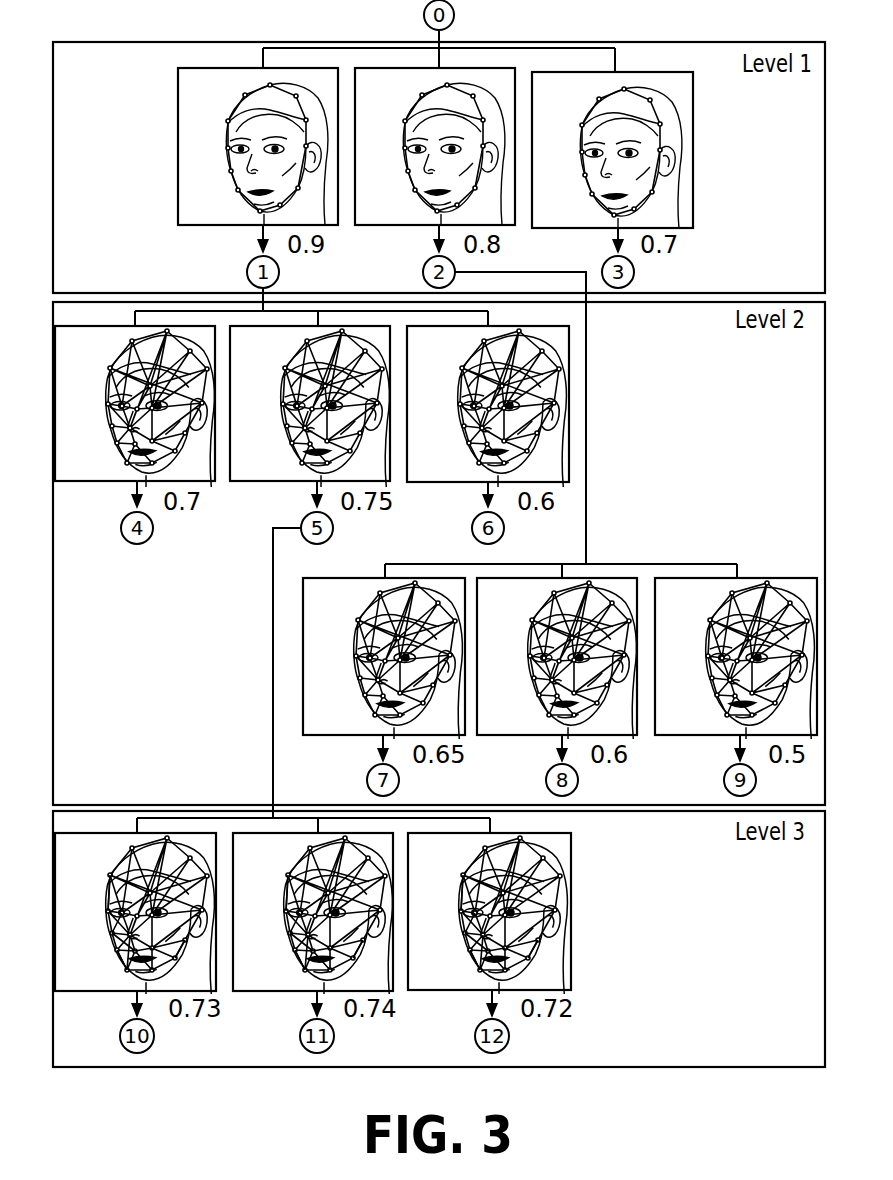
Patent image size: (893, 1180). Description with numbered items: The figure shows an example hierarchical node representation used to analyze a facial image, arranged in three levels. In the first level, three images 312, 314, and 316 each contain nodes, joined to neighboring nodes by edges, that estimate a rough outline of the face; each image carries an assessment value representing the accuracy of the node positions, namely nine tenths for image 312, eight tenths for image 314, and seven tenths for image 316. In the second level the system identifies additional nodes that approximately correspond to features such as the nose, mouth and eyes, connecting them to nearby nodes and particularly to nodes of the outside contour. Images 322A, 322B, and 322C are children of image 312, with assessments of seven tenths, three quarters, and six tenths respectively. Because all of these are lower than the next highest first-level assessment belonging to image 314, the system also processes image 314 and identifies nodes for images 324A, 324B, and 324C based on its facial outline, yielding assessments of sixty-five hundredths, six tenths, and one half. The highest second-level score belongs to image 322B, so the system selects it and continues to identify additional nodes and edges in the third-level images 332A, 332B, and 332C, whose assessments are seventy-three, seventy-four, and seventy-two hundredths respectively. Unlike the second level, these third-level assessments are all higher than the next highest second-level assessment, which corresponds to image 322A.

The image 312 is at (258, 146).
The image 314 is at (435, 146).
The image 316 is at (612, 150).
The image 322A is at (135, 406).
The image 322B is at (310, 406).
The image 322C is at (488, 406).
The image 324A is at (384, 658).
The image 324B is at (557, 658).
The image 324C is at (736, 658).
The image 332A is at (135, 913).
The image 332B is at (313, 913).
The image 332C is at (489, 913).